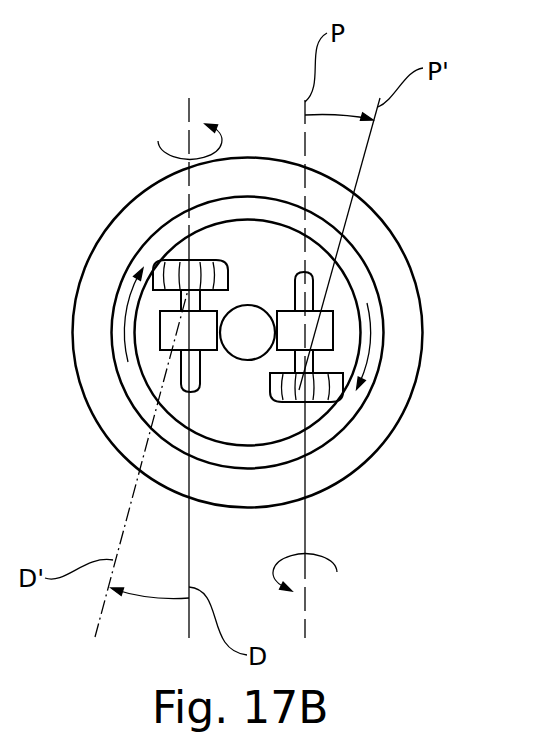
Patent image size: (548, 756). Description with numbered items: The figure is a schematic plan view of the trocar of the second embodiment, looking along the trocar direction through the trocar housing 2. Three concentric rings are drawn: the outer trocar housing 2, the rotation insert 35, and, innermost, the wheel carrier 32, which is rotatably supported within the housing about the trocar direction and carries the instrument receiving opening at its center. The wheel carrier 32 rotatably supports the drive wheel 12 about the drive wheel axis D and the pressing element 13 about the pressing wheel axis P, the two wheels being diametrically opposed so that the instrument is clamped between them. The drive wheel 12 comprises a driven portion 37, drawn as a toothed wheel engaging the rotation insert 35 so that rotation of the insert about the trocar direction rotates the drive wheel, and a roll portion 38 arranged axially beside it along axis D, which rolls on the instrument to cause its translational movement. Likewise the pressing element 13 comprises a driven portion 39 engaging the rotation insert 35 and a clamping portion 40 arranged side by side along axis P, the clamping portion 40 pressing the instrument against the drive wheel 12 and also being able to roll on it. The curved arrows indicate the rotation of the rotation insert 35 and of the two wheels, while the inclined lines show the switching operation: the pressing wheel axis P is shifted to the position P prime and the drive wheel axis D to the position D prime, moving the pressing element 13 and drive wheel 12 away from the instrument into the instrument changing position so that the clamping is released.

The trocar housing 2 is at (317, 468).
The drive wheel 12 is at (160, 355).
The pressing element (wheel) 13 is at (340, 313).
The wheel carrier 32 is at (253, 279).
The rotation insert 35 is at (347, 257).
The driven portion 37 is at (208, 274).
The roll portion 38 is at (170, 323).
The driven portion 39 is at (322, 393).
The clamping portion 40 is at (327, 332).